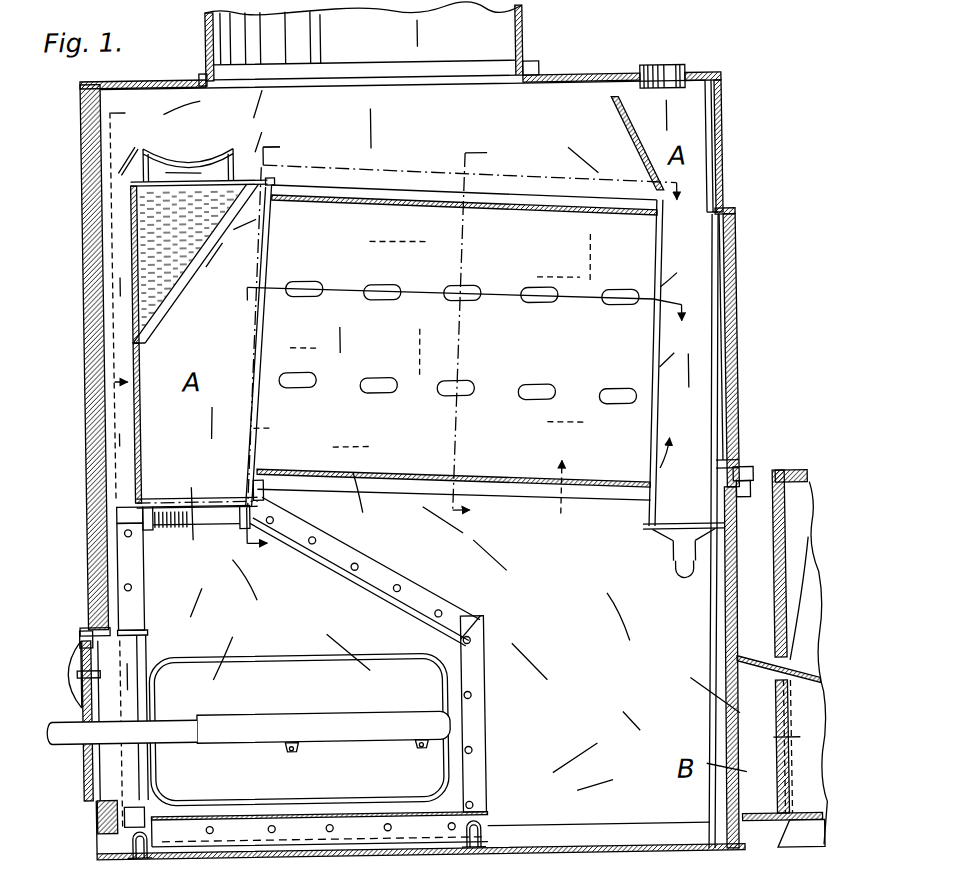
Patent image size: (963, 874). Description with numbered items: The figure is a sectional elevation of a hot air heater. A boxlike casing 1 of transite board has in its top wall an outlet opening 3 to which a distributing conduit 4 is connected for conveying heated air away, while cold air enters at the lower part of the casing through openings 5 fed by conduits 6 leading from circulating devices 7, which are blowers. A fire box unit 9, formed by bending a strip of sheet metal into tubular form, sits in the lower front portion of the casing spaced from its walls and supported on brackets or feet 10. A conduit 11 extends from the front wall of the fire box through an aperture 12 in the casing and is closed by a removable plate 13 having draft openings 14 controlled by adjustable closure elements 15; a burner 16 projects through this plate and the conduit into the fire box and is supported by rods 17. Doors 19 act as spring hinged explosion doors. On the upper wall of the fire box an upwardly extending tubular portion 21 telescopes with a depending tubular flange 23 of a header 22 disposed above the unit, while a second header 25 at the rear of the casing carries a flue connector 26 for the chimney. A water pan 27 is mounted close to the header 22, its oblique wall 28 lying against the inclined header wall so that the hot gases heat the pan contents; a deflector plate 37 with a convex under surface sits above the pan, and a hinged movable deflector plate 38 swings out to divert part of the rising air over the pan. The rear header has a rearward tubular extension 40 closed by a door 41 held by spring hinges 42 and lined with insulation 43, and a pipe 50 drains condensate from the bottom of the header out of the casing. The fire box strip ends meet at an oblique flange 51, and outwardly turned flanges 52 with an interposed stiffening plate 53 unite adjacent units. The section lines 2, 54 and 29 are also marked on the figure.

The casing 1 is at (81, 305).
The section line 2- 2 is at (134, 301).
The outlet opening 3 is at (467, 78).
The distributing conduit 4 is at (504, 40).
The opening 5 is at (730, 723).
The conduit 6 is at (757, 824).
The circulating device 7 is at (799, 599).
The fire box unit 9 is at (370, 588).
The bracket or foot 10 is at (495, 849).
The conduit 11 is at (138, 641).
The aperture 12 is at (82, 627).
The removable plate 13 is at (73, 640).
The draft opening 14 is at (59, 780).
The adjustable closure element 15 is at (66, 647).
The burner 16 is at (230, 722).
The rod 17 is at (276, 756).
The door 19 is at (354, 694).
The tubular portion 21 is at (230, 520).
The header 22 is at (172, 434).
The depending tubular flange 23 is at (257, 500).
The header 25 is at (614, 127).
The flue connector 26 is at (666, 74).
The water pan 27 is at (128, 244).
The oblique wall 28 is at (179, 285).
The lower edge of inclined wall 29 is at (131, 344).
The deflector plate 37 is at (179, 151).
The movable deflector plate 38 is at (134, 147).
The rearward tubular extension 40 is at (710, 227).
The door 41 is at (734, 267).
The spring hinge 42 is at (742, 488).
The lining 43 is at (724, 367).
The pipe 50 is at (665, 577).
The oblique flange 51 is at (162, 820).
The outwardly turned flange 52 is at (432, 578).
The stiffening plate 53 is at (469, 626).
The screw 54 is at (376, 832).